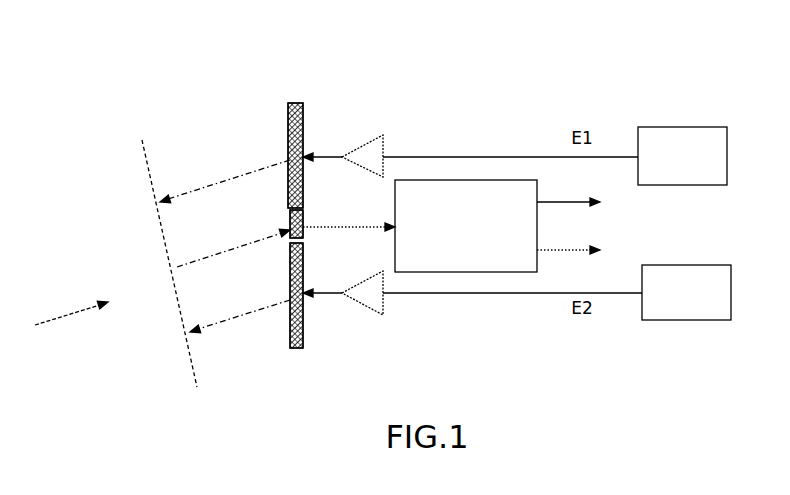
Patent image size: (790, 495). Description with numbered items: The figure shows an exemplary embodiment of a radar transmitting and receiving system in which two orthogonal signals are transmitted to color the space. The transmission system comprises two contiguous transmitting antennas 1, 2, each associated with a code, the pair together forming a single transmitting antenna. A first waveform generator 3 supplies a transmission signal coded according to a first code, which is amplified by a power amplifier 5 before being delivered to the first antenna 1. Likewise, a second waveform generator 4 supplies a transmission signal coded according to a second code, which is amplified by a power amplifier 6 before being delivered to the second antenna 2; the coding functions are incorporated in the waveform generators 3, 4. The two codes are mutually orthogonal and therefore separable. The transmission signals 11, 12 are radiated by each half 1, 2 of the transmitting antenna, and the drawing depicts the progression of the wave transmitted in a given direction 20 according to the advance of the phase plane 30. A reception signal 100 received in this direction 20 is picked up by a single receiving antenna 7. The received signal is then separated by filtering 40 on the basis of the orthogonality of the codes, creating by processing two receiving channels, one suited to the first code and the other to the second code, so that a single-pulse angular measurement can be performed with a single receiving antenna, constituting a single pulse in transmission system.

The first transmitting antenna 1 is at (303, 110).
The second transmitting antenna 2 is at (303, 340).
The first waveform generator 3 is at (678, 127).
The second waveform generator 4 is at (683, 265).
The power amplifier 5 is at (380, 130).
The power amplifier 6 is at (382, 308).
The receiving antenna 7 is at (303, 215).
The transmission signal 11 is at (207, 180).
The transmission signal 12 is at (242, 315).
The given direction 20 is at (63, 317).
The phase plane 30 is at (193, 362).
The filtering 40 is at (500, 180).
The reception signal 100 is at (217, 253).